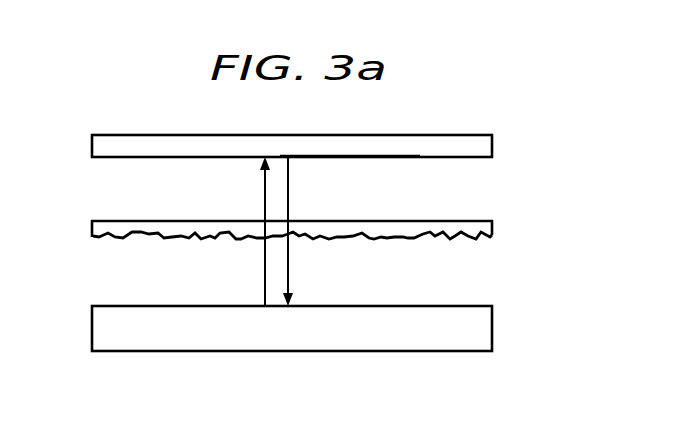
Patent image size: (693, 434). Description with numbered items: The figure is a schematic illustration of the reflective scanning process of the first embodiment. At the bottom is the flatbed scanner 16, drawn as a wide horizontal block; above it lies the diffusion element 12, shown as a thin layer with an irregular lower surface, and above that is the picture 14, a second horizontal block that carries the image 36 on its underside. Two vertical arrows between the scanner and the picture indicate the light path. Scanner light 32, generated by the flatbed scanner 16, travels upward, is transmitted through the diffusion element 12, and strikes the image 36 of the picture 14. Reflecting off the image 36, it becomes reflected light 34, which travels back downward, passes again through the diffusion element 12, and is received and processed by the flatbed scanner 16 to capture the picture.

The picture 14 is at (492, 146).
The image 36 is at (370, 158).
The diffusion element 12 is at (500, 230).
The scanner light 32 is at (264, 202).
The reflected light 34 is at (289, 276).
The flatbed scanner 16 is at (239, 347).